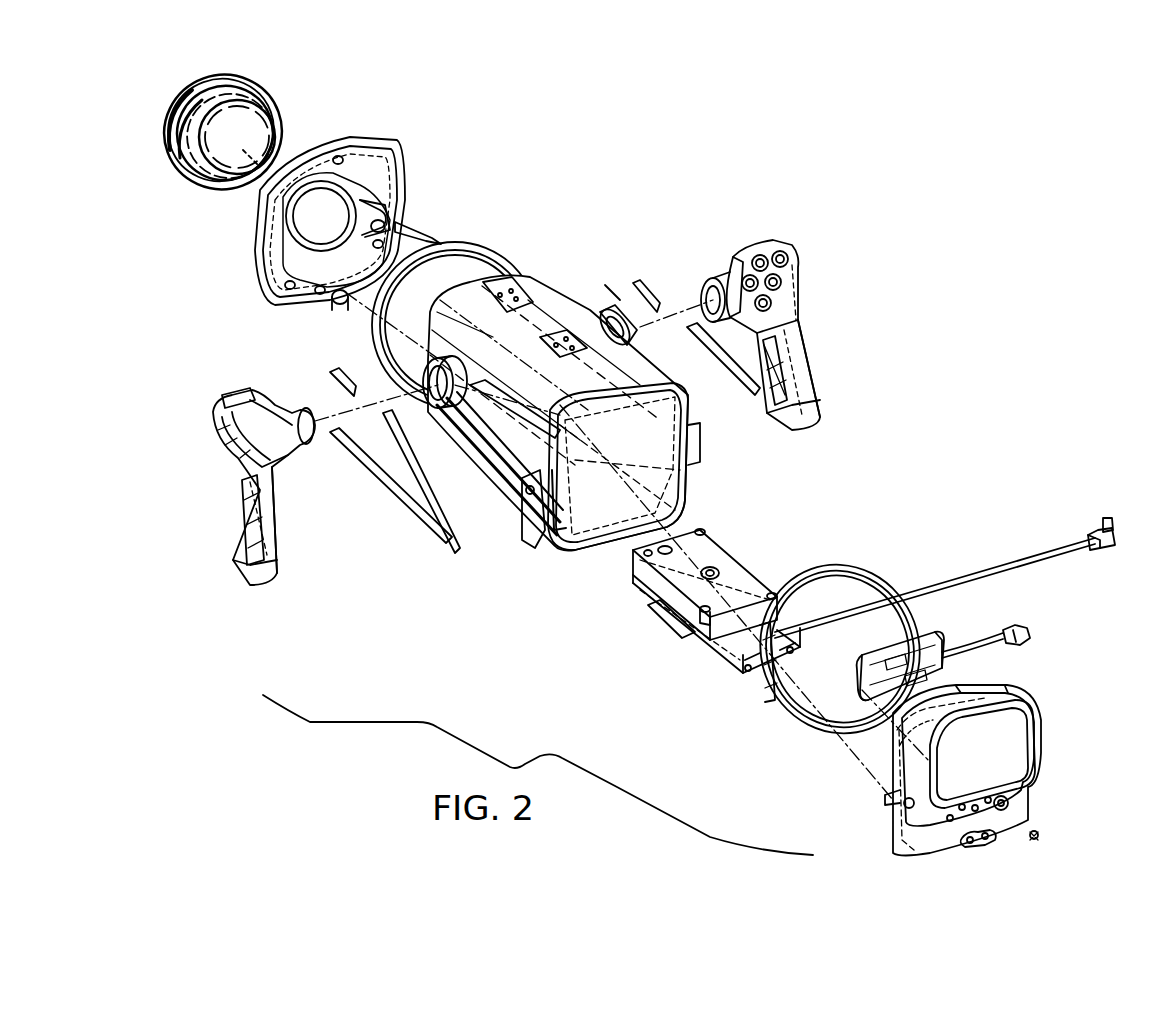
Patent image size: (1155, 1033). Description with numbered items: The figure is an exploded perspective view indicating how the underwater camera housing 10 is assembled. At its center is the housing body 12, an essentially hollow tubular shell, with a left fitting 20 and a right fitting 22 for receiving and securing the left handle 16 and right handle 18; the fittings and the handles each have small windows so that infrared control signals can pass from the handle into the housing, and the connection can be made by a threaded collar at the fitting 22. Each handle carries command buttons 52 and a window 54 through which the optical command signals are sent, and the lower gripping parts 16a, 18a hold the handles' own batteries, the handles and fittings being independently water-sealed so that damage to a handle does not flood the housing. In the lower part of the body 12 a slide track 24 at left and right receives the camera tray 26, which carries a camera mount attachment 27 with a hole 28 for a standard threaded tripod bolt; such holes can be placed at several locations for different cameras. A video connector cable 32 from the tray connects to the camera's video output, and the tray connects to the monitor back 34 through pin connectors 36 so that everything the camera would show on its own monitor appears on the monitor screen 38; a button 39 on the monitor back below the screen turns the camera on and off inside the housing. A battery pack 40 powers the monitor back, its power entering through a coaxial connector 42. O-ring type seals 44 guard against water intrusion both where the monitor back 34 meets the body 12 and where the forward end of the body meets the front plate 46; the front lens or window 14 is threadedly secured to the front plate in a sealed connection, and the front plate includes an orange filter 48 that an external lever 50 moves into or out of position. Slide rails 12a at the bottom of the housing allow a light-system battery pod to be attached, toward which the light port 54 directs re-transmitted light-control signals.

The underwater camera housing 10 is at (995, 239).
The housing body 12 is at (568, 308).
The slide rails 12a is at (663, 530).
The front lens or window 14 is at (265, 100).
The left handle 16 is at (233, 457).
The lower gripping part of left handle 16a is at (277, 556).
The right handle 18 is at (801, 320).
The lower gripping part of right handle 18a is at (810, 393).
The left handle fitting 20 is at (425, 384).
The right handle fitting 22 is at (620, 293).
The slide track 24 is at (633, 503).
The camera tray 26 is at (680, 618).
The camera mount attachment 27 is at (747, 567).
The hole 28 is at (713, 570).
The video connector cable 32 is at (1093, 520).
The monitor back 34 is at (1037, 700).
The pin connectors 36 is at (792, 658).
The monitor screen 38 is at (993, 760).
The button 39 is at (1010, 807).
The battery pack 40 is at (933, 643).
The coaxial connector 42 is at (1030, 632).
The O-ring type seals 44 is at (460, 243).
The front plate 46 is at (397, 145).
The orange filter 48 is at (337, 213).
The external lever 50 is at (425, 238).
The command buttons 52 is at (780, 253).
The window / light port 54 is at (713, 297).